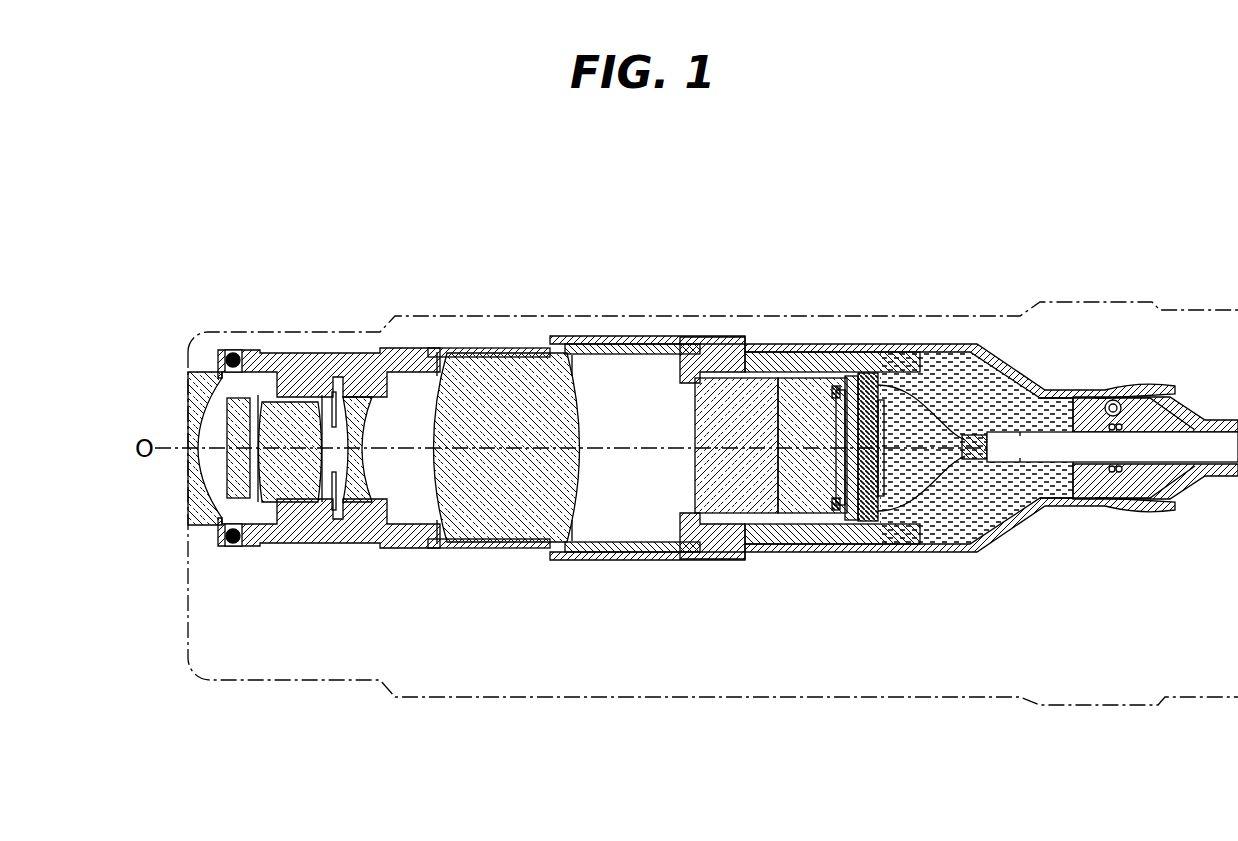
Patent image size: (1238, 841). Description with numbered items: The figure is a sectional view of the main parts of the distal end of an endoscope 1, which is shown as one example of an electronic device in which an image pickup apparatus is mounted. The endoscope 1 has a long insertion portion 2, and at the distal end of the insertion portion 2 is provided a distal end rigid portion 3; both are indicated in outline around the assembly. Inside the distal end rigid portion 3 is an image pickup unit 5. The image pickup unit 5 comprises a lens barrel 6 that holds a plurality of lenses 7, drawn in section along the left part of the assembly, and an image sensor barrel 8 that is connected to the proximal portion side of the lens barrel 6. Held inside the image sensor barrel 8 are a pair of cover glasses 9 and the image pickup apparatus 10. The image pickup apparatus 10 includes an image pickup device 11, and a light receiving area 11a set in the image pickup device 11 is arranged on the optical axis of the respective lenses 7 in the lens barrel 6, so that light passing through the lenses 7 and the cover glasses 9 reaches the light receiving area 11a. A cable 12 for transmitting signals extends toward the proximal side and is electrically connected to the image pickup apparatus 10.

The endoscope 1 is at (1160, 195).
The insertion portion 2 is at (1097, 234).
The distal end rigid portion 3 is at (542, 312).
The image pickup unit 5 is at (668, 336).
The lens barrel 6 is at (404, 350).
The lenses 7 is at (200, 380).
The image sensor barrel 8 is at (710, 350).
The cover glasses 9 is at (795, 388).
The image pickup apparatus 10 is at (863, 357).
The image pickup device 11 is at (860, 488).
The light receiving area 11a is at (837, 450).
The cable 12 is at (1060, 452).